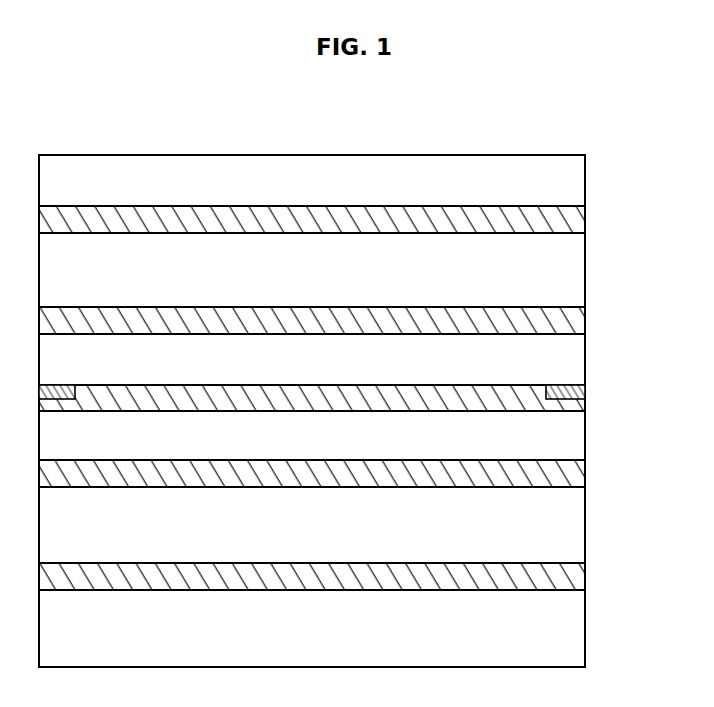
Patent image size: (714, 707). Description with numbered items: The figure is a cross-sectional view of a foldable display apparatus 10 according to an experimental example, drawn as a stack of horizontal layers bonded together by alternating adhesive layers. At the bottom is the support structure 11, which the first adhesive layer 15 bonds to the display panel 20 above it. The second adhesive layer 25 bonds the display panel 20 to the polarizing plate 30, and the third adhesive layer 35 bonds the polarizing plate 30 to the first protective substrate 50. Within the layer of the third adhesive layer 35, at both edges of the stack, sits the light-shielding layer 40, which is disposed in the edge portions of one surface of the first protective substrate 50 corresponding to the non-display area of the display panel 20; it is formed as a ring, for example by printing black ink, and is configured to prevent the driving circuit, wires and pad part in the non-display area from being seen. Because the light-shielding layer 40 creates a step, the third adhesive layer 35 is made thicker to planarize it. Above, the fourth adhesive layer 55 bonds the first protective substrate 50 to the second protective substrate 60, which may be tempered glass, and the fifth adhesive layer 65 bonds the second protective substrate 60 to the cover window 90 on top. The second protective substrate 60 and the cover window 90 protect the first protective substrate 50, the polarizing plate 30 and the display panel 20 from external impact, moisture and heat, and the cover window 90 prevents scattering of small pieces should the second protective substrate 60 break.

The foldable display apparatus 10 is at (545, 99).
The support structure 11 is at (577, 630).
The first adhesive layer 15 is at (577, 577).
The display panel 20 is at (577, 523).
The second adhesive layer 25 is at (577, 474).
The polarizing plate 30 is at (575, 440).
The third adhesive layer 35 is at (577, 404).
The light-shielding layer 40 is at (576, 391).
The first protective substrate 50 is at (577, 358).
The fourth adhesive layer 55 is at (577, 322).
The second protective substrate 60 is at (577, 270).
The fifth adhesive layer 65 is at (577, 219).
The cover window 90 is at (577, 180).